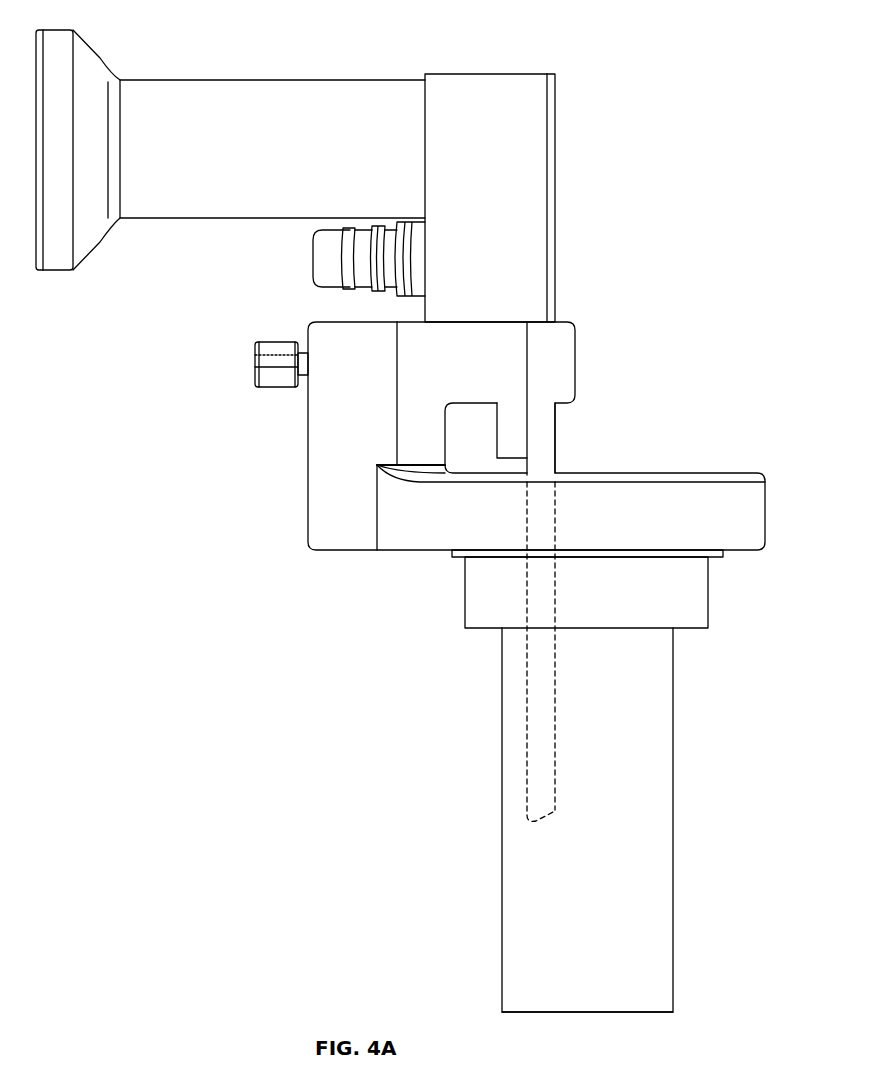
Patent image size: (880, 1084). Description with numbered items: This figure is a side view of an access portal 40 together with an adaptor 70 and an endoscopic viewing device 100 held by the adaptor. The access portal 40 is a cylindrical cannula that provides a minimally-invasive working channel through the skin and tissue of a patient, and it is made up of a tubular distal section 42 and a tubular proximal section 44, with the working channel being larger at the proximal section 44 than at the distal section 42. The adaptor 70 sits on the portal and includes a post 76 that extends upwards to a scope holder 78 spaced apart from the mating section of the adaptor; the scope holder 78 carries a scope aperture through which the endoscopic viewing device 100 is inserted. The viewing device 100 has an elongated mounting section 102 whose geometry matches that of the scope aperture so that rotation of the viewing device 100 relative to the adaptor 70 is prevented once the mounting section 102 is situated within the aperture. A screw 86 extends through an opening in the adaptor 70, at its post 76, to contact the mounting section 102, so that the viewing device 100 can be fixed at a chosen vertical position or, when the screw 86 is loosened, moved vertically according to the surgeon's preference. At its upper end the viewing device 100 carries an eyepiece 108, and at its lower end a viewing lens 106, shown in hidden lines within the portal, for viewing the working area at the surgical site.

The access portal 40 is at (658, 818).
The distal section 42 is at (512, 978).
The proximal section 44 is at (700, 612).
The adaptor 70 is at (752, 520).
The post 76 is at (328, 443).
The scope holder 78 is at (560, 370).
The screw 86 is at (265, 358).
The endoscopic viewing device 100 is at (207, 198).
The mounting section 102 is at (515, 447).
The viewing lens 106 is at (545, 815).
The eyepiece 108 is at (53, 248).